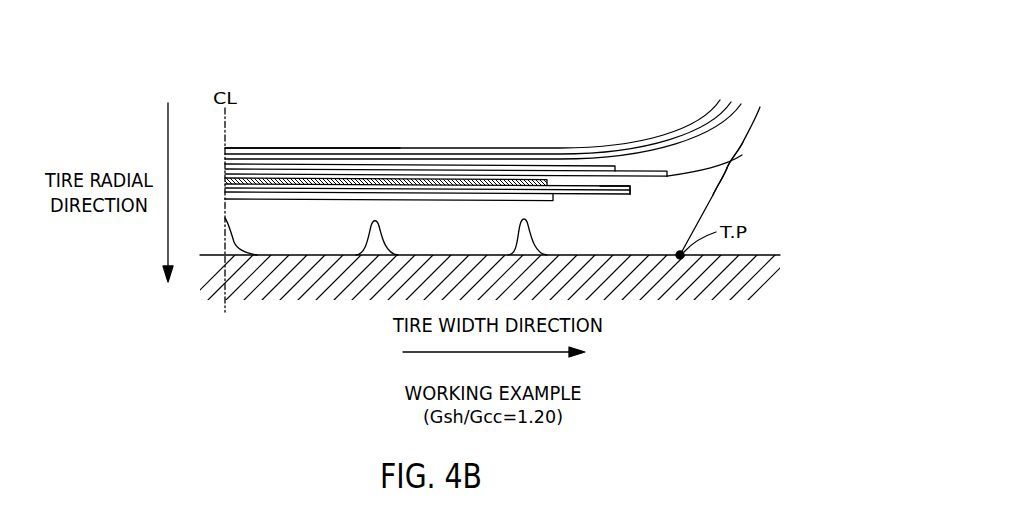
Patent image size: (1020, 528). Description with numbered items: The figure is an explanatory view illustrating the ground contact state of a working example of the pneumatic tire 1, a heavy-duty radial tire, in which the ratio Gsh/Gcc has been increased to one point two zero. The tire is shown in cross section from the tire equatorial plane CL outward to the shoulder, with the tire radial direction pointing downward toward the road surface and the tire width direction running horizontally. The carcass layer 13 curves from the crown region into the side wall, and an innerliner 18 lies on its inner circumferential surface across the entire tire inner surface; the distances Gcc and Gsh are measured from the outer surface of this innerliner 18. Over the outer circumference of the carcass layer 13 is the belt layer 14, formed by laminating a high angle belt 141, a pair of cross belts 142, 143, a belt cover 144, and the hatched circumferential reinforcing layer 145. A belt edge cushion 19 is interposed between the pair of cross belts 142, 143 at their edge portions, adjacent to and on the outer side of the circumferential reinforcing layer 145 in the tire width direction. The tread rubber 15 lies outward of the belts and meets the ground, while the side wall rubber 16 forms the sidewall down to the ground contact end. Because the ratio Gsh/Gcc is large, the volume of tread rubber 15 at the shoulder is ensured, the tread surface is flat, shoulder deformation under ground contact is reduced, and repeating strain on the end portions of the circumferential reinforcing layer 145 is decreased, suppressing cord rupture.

The pneumatic tire 1 is at (701, 62).
The carcass layer 13 is at (651, 147).
The belt layer 14 is at (446, 132).
The high angle belt 141 is at (563, 171).
The cross belt 142 is at (517, 176).
The cross belt 143 is at (423, 188).
The belt cover 144 is at (582, 103).
The circumferential reinforcing layer 145 is at (470, 180).
The tread rubber 15 is at (700, 195).
The side wall rubber 16 is at (707, 145).
The innerliner 18 is at (328, 152).
The belt edge cushion 19 is at (625, 183).